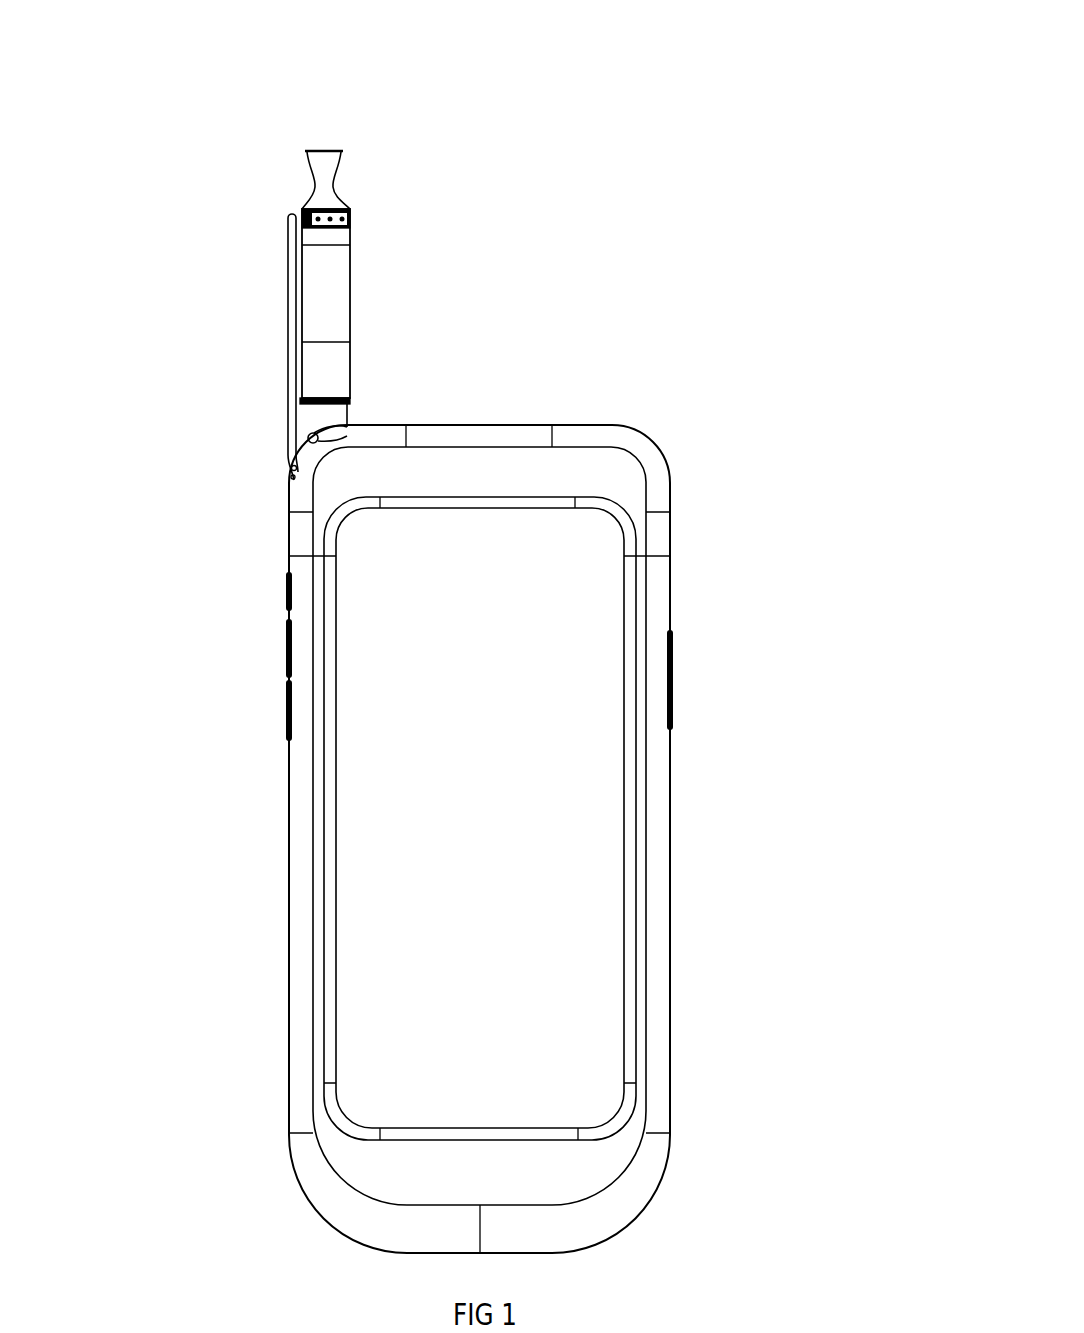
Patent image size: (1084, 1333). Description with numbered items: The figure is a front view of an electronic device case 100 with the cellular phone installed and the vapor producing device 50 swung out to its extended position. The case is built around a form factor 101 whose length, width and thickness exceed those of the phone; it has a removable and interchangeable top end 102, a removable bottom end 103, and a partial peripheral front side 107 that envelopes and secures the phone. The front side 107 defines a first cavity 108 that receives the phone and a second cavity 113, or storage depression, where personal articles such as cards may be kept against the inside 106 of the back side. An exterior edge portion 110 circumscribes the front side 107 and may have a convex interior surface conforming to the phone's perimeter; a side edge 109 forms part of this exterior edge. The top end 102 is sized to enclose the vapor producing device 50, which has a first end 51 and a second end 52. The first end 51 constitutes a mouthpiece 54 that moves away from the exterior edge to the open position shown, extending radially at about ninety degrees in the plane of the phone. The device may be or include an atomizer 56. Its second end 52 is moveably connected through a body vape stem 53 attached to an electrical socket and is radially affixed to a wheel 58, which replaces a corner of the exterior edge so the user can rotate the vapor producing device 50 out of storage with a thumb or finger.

The first end 51 is at (200, 85).
The vapor producing device 50 is at (452, 330).
The second end 52 is at (285, 390).
The body vape stem 53 is at (290, 327).
The mouthpiece 54 is at (333, 151).
The atomizer 56 is at (350, 302).
The wheel 58 is at (285, 468).
The electronic device case 100 is at (672, 375).
The form factor 101 is at (780, 1138).
The top end 102 is at (507, 485).
The bottom end 103 is at (507, 1186).
The inside 106 is at (420, 1040).
The front side 107 is at (611, 487).
The first cavity 108 is at (507, 571).
The side edge 109 is at (289, 793).
The exterior edge portion 110 is at (507, 425).
The second cavity 113 is at (507, 886).